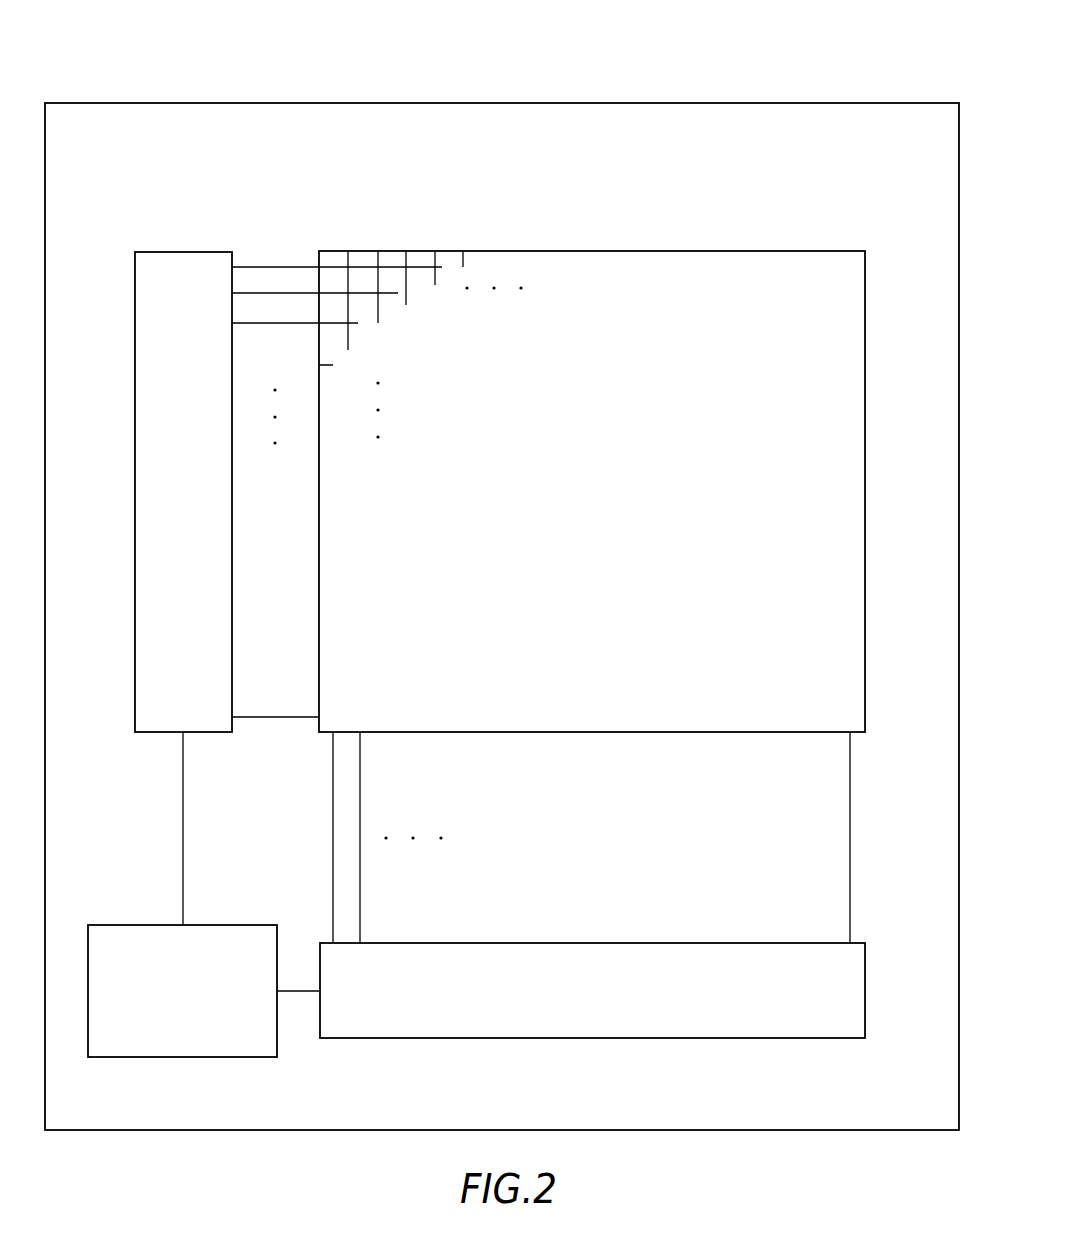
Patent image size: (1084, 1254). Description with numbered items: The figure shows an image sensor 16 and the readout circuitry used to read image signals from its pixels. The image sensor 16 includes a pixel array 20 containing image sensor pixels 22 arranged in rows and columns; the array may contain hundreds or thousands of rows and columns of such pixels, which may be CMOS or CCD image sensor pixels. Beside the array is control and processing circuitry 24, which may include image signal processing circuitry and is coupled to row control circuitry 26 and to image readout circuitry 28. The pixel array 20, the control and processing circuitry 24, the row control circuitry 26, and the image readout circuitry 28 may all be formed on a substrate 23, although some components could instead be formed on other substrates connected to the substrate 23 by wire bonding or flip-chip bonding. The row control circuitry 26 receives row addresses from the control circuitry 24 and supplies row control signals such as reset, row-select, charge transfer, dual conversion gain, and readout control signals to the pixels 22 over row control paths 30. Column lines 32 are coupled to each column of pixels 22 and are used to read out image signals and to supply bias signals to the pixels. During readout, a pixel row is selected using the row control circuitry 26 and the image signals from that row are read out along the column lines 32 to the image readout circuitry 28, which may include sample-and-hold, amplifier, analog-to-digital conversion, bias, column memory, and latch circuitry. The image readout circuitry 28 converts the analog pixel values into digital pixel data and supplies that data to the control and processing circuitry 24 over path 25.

The image sensor 16 is at (880, 73).
The pixel array 20 is at (592, 451).
The image sensor pixels 22 is at (391, 266).
The substrate 23 is at (857, 1115).
The control and processing circuitry 24 is at (133, 935).
The path 25 is at (300, 995).
The row control circuitry 26 is at (161, 262).
The image readout circuitry 28 is at (855, 1030).
The row control paths 30 is at (284, 265).
The column lines 32 is at (333, 798).